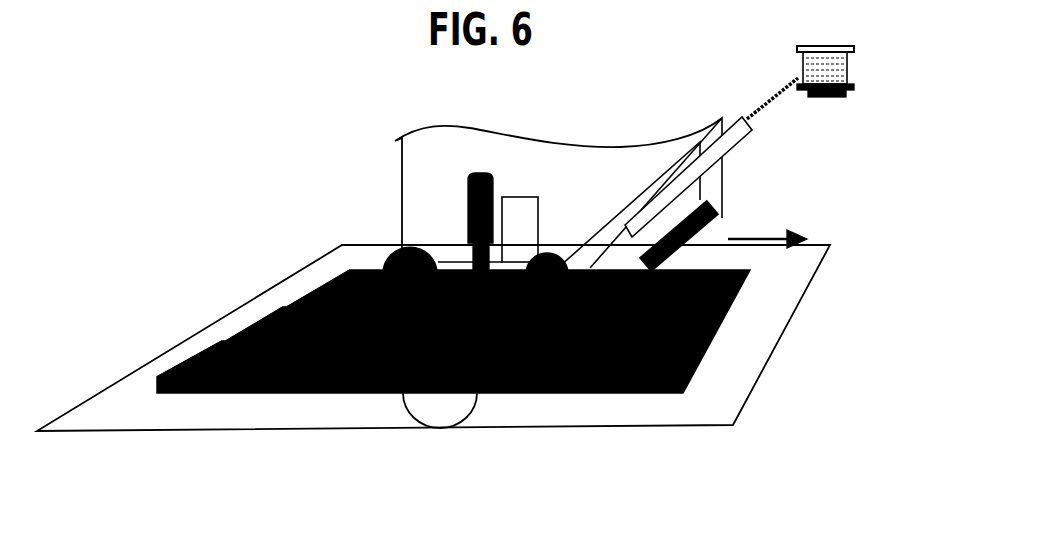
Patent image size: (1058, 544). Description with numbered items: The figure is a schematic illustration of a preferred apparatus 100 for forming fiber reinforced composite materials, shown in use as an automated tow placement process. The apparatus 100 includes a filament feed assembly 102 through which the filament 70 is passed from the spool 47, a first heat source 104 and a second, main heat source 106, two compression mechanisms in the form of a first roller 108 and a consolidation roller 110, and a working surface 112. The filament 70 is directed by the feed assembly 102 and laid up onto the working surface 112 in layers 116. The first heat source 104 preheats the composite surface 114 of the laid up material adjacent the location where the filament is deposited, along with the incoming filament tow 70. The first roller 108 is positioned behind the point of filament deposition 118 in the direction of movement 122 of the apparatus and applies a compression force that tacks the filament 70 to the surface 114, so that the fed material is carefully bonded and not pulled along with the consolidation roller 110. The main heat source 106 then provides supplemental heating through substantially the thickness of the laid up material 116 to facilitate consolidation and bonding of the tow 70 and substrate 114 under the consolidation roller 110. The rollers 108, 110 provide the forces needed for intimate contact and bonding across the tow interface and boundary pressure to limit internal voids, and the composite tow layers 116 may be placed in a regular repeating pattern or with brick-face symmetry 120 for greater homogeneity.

The apparatus 100 is at (222, 131).
The filament feed assembly 102 is at (644, 190).
The first heat source 104 is at (719, 189).
The second, main heat source 106 is at (440, 172).
The first roller 108 is at (550, 236).
The consolidation roller 110 is at (375, 246).
The working surface 112 is at (766, 334).
The surface of the laid up filament composite material 114 is at (325, 284).
The layers 116 is at (300, 292).
The point of filament deposition 118 is at (574, 390).
The brick-face symmetry 120 is at (490, 403).
The direction of movement 122 is at (767, 228).
The spool 47 is at (838, 46).
The filament 70 is at (757, 114).